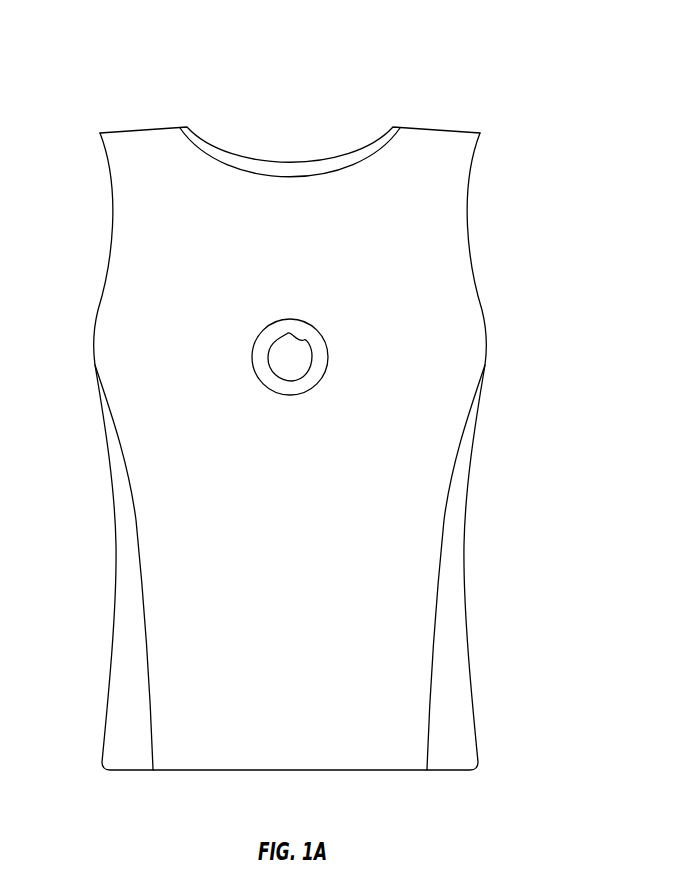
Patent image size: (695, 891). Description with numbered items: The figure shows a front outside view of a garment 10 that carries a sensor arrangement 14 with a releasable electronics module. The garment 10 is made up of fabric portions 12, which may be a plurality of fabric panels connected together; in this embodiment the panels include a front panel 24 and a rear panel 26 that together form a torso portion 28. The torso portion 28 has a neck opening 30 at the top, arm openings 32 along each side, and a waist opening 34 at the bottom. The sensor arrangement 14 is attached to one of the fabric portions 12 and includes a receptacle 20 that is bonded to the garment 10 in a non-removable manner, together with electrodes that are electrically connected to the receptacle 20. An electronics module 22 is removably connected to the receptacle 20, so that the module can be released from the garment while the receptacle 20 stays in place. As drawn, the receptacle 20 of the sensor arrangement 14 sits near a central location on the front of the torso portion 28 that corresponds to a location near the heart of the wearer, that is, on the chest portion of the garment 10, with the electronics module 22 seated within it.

The garment 10 is at (114, 97).
The fabric portions 12 is at (162, 542).
The sensor arrangement 14 is at (334, 329).
The receptacle 20 is at (272, 342).
The electronics module 22 is at (290, 368).
The front panel 24 is at (155, 426).
The rear panel 26 is at (455, 682).
The torso portion 28 is at (435, 472).
The neck opening 30 is at (297, 152).
The arm openings 32 is at (475, 216).
The waist opening 34 is at (396, 764).